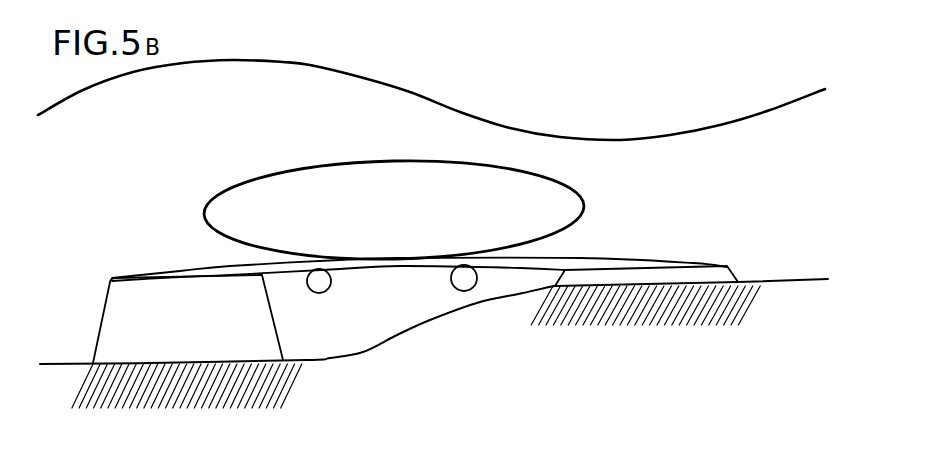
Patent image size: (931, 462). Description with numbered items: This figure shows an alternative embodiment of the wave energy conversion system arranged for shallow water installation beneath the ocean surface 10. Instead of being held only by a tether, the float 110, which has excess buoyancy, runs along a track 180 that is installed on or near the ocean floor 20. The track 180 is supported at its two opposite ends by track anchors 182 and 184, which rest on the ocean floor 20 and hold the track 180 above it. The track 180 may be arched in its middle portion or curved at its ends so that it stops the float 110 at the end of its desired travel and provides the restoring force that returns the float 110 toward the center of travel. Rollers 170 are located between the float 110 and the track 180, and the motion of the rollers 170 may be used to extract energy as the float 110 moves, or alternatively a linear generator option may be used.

The ocean surface 10 is at (412, 92).
The ocean floor 20 is at (367, 352).
The float 110 is at (219, 195).
The rollers 170 is at (452, 288).
The track 180 is at (590, 262).
The track anchor 182 is at (104, 313).
The track anchor 184 is at (727, 268).